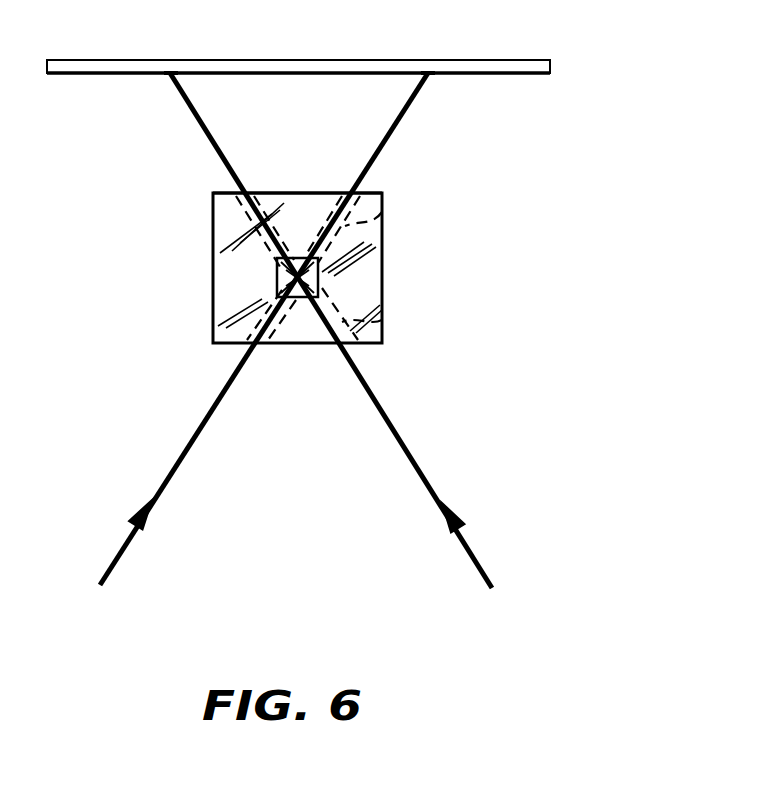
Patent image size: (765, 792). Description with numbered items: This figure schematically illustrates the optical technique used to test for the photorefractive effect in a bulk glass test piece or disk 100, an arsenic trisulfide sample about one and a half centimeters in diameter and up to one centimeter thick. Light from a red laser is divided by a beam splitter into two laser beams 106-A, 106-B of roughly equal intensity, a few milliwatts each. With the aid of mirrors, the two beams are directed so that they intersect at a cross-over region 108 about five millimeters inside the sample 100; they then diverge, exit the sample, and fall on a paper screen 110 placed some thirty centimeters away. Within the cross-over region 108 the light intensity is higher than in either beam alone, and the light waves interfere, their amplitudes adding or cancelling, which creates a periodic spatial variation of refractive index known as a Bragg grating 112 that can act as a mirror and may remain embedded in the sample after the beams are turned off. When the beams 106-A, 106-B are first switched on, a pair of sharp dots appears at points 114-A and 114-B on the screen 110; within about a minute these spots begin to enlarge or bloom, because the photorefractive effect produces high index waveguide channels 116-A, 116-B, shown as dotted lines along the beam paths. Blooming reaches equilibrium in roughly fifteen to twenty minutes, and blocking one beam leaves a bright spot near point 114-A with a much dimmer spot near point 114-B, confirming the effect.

The test piece or disk 100 is at (364, 263).
The laser beam 106-A is at (183, 452).
The laser beam 106-B is at (418, 457).
The cross-over region 108 is at (277, 277).
The paper screen 110 is at (515, 78).
The Bragg grating 112 is at (297, 192).
The point 114-A is at (432, 69).
The point 114-B is at (172, 70).
The high index waveguide channel 116-A is at (383, 212).
The high index waveguide channel 116-B is at (390, 320).